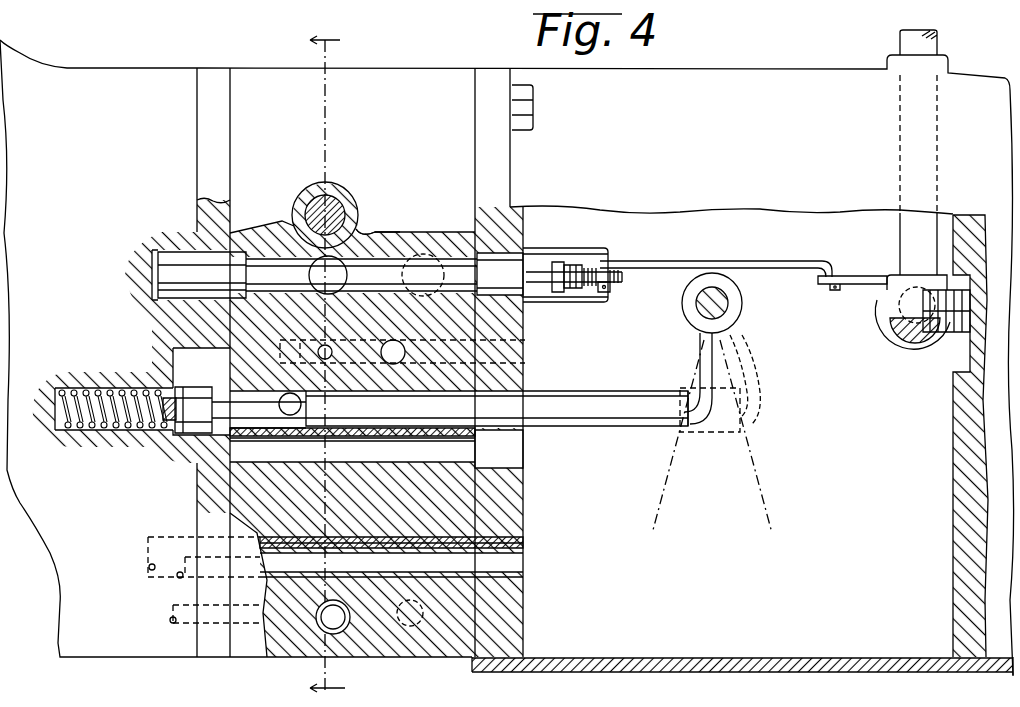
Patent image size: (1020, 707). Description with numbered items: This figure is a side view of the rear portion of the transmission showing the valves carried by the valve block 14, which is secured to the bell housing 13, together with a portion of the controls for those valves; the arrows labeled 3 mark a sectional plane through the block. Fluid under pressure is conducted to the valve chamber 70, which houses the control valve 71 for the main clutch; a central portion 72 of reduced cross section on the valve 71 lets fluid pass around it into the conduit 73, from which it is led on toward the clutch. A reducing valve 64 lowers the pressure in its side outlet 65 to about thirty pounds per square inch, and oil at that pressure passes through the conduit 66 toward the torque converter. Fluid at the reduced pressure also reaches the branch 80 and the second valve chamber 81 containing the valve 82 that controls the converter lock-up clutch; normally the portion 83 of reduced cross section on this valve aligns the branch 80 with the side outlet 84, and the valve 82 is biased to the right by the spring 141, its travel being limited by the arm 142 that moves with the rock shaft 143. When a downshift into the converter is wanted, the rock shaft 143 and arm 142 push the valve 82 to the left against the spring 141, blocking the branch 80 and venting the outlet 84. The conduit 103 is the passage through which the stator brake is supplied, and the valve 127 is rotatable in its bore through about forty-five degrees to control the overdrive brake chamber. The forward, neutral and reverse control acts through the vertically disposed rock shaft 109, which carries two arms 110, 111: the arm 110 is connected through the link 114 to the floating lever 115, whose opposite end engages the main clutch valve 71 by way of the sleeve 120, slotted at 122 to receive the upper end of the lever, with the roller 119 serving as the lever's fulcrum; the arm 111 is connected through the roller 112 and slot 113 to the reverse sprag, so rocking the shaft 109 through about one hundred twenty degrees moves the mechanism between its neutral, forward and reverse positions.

The bell housing 13 is at (97, 65).
The valve block 14 is at (448, 63).
The section line 3- 3 is at (336, 366).
The rock shaft 109 is at (910, 45).
The valve chamber 70 is at (286, 232).
The valve 127 is at (332, 200).
The conduit 73 is at (368, 226).
The control valve 71 is at (177, 262).
The central portion of reduced cross section 72 is at (267, 268).
The sleeve 120 is at (598, 304).
The lever 115 is at (592, 273).
The slot 122 is at (536, 270).
The roller 119 is at (548, 290).
The link 114 is at (766, 262).
The arm 110 is at (858, 276).
The slot 113 is at (890, 324).
The arm 111 is at (942, 366).
The roller 112 is at (957, 338).
The rock shaft 143 is at (742, 303).
The arm 142 is at (717, 363).
The conduit 103 is at (338, 346).
The branch 80 is at (350, 400).
The valve 82 is at (634, 430).
The side outlet 84 is at (272, 402).
The portion of reduced cross section 83 is at (207, 400).
The spring 141 is at (75, 420).
The valve chamber 81 is at (270, 432).
The side outlet 65 is at (355, 584).
The reducing valve 64 is at (330, 635).
The conduit 66 is at (180, 589).